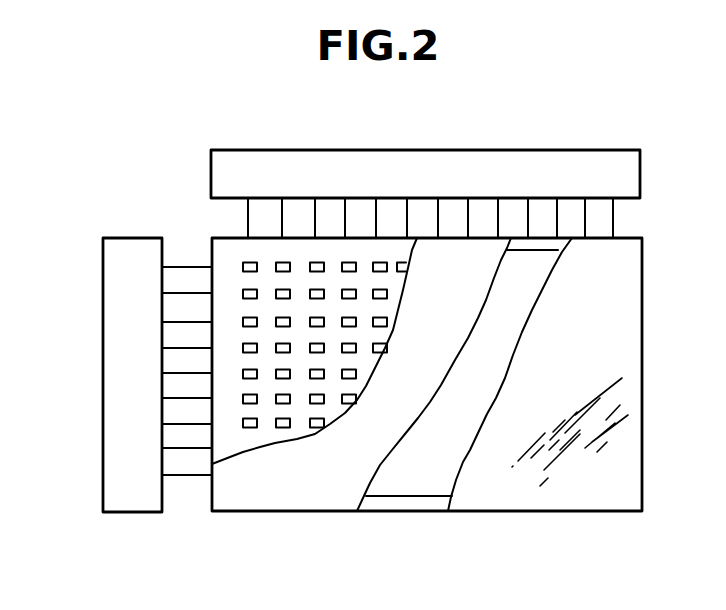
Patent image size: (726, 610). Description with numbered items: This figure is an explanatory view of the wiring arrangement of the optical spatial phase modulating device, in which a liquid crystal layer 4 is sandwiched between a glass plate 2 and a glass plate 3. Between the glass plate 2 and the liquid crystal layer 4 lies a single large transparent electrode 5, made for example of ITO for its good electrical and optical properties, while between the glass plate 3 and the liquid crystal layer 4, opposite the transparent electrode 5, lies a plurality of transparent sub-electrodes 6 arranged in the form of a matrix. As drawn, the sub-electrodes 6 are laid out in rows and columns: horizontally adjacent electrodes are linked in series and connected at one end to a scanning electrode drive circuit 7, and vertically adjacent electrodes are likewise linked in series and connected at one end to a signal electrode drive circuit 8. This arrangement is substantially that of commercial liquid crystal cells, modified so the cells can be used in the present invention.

The glass plate 2 is at (584, 503).
The glass plate 3 is at (223, 241).
The liquid crystal layer 4 is at (317, 500).
The transparent electrode 5 is at (430, 477).
The transparent sub-electrodes 6 is at (283, 397).
The scanning electrode drive circuit 7 is at (100, 335).
The signal electrode drive circuit 8 is at (433, 150).